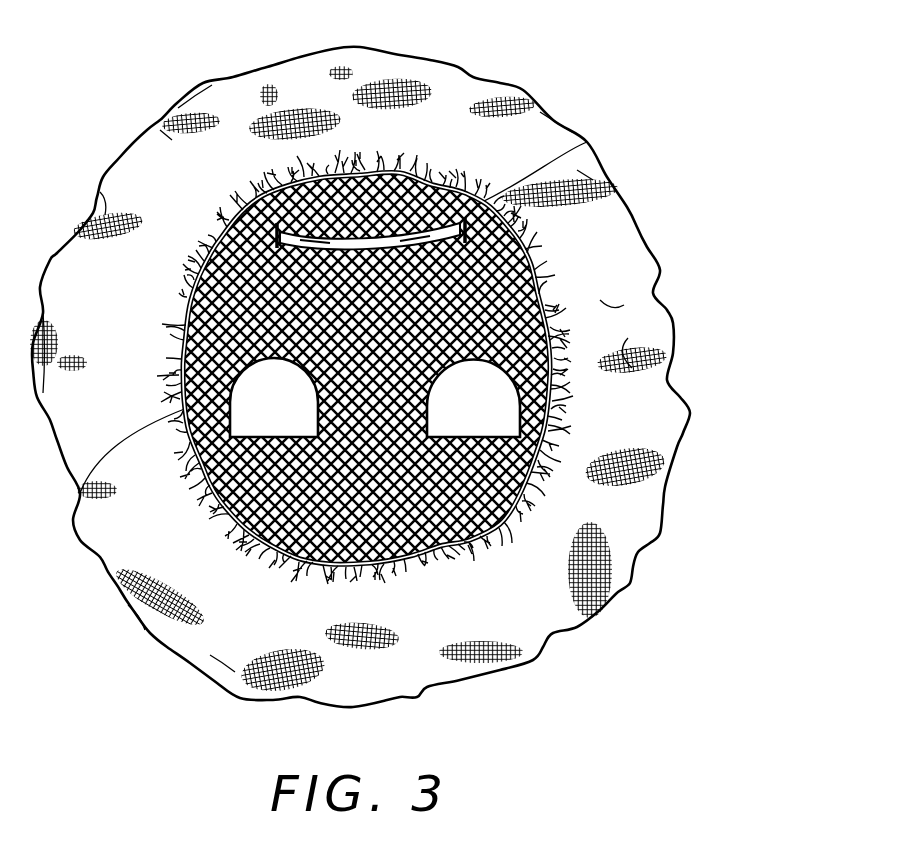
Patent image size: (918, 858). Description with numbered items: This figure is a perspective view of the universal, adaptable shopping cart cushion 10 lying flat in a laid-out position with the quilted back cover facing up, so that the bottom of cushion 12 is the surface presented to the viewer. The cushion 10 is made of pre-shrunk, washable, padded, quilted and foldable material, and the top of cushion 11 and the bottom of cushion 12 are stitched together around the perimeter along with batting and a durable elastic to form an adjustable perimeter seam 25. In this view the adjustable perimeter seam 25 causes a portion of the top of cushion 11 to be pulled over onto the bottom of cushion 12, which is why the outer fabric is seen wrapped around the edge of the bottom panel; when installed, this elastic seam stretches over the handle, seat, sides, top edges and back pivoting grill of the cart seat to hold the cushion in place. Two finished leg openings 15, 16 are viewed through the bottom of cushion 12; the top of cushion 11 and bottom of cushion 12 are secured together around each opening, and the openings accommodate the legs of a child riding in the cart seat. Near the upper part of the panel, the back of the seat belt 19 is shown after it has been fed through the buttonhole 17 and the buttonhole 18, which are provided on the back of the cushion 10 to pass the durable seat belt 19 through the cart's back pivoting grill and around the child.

The universal, adaptable shopping cart cushion 10 is at (404, 377).
The top of cushion 11 is at (623, 520).
The bottom of cushion 12 is at (388, 353).
The finished leg opening 15 is at (274, 397).
The finished leg opening 16 is at (473, 399).
The buttonhole 17 is at (237, 217).
The buttonhole 18 is at (587, 142).
The seat belt 19 is at (365, 353).
The adjustable perimeter seam 25 is at (78, 487).